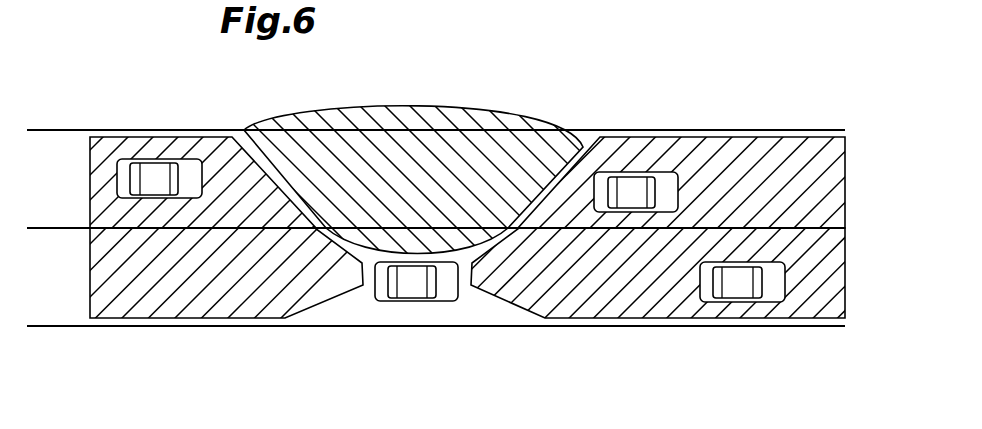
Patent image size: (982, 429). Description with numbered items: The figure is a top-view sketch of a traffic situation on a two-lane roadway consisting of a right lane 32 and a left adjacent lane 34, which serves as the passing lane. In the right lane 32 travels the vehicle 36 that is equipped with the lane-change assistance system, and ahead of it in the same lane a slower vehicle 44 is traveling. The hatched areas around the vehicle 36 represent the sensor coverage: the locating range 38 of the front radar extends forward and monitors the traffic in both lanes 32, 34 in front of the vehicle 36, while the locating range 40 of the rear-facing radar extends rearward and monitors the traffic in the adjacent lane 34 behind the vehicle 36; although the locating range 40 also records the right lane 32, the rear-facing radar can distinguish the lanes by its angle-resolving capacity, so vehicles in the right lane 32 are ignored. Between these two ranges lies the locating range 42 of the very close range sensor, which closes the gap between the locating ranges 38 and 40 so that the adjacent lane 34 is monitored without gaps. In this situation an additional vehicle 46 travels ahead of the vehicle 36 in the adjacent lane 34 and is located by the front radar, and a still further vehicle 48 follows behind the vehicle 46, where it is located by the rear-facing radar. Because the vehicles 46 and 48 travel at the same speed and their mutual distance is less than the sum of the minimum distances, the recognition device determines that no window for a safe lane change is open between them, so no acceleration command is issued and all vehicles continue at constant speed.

The right lane 32 is at (72, 292).
The left adjacent lane 34 is at (72, 197).
The vehicle 36 is at (415, 290).
The locating range of front radar 38 is at (765, 152).
The locating range of rear-facing radar 40 is at (218, 312).
The locating range of very close range sensor 42 is at (427, 113).
The slower vehicle 44 is at (737, 290).
The additional vehicle 46 is at (633, 183).
The still further vehicle 48 is at (156, 162).